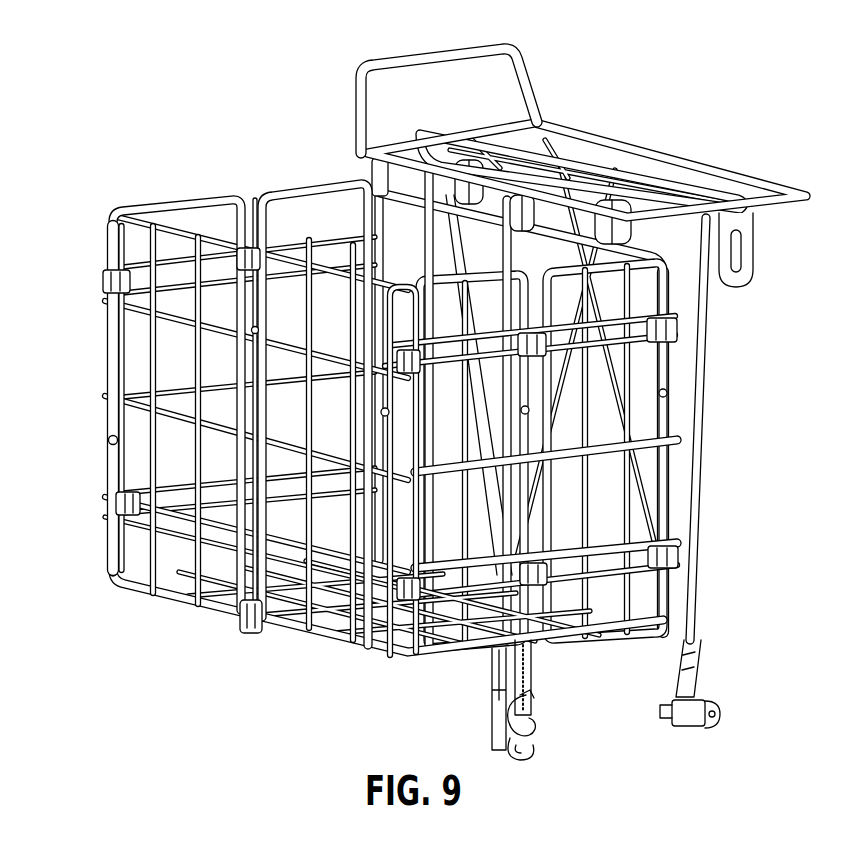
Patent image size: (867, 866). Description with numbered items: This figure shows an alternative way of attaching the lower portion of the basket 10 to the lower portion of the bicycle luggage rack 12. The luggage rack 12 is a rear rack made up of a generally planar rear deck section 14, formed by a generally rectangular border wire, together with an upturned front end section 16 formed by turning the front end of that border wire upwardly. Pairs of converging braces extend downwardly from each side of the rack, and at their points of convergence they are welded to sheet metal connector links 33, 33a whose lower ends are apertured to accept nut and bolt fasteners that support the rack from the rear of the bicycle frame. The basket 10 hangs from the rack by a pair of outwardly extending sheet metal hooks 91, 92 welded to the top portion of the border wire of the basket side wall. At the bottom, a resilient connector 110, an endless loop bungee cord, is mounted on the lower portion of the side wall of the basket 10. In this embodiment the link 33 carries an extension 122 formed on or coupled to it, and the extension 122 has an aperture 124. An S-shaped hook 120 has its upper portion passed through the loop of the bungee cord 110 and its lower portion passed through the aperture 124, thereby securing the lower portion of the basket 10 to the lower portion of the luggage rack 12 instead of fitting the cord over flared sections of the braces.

The basket 10 is at (92, 205).
The luggage rack 12 is at (612, 111).
The rear deck section 14 is at (720, 168).
The upturned front end section 16 is at (409, 52).
The sheet metal hook 91 is at (640, 236).
The sheet metal hook 92 is at (380, 178).
The sheet metal connector link 33 is at (487, 712).
The sheet metal connector link 33a is at (700, 668).
The resilient connector 110 is at (545, 655).
The S-shaped hook 120 is at (540, 713).
The extension 122 is at (540, 752).
The aperture 124 is at (705, 731).